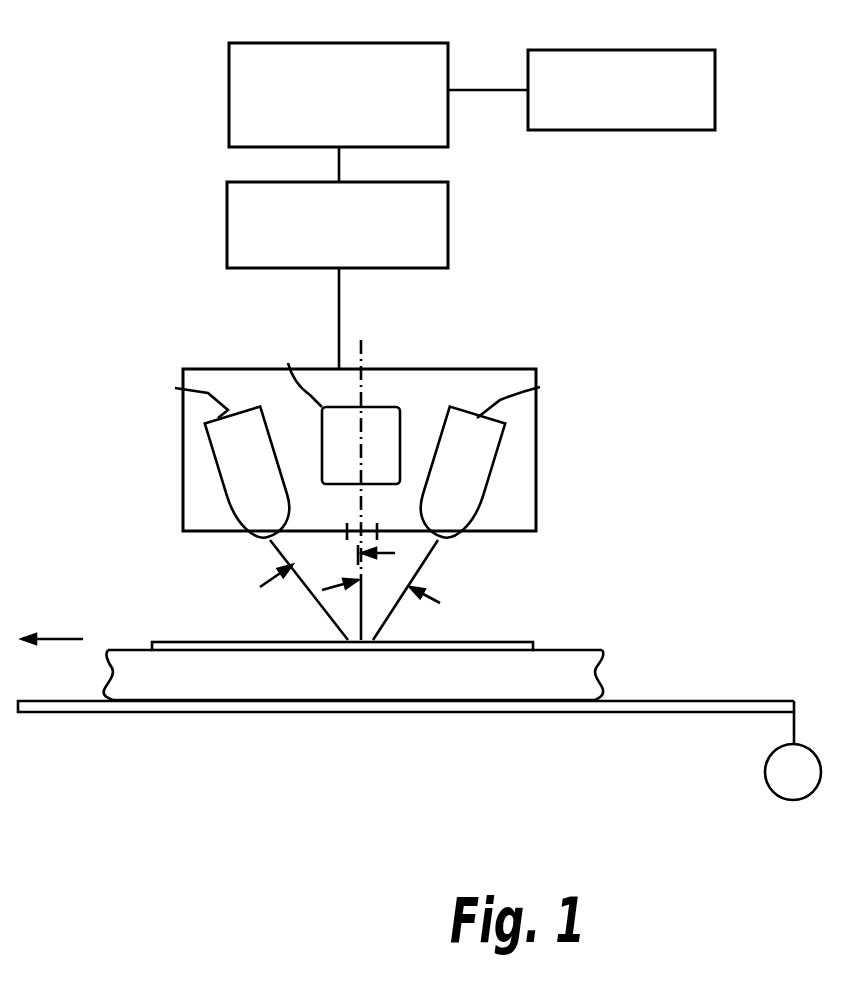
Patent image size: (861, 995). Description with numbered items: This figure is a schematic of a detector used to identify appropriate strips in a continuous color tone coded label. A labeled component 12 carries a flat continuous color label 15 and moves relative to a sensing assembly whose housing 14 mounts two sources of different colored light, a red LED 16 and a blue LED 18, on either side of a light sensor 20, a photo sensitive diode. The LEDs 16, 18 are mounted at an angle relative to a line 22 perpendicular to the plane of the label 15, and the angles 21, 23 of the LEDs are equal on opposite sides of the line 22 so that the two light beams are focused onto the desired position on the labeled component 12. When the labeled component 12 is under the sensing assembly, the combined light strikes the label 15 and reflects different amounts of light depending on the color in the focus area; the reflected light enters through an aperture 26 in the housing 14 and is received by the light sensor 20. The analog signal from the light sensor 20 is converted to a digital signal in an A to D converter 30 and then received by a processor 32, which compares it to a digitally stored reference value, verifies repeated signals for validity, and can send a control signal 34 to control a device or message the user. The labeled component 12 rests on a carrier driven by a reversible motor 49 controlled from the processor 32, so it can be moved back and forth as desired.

The labeled component 12 is at (108, 668).
The housing 14 is at (536, 473).
The continuous color label 15 is at (152, 642).
The red LED 16 is at (205, 435).
The blue LED 18 is at (500, 445).
The light sensor 20 is at (378, 405).
The angle of red LED 21 is at (352, 550).
The line perpendicular to the plane of the label 22 is at (362, 579).
The angle of blue LED 23 is at (422, 590).
The aperture 26 is at (365, 532).
The A to D converter 30 is at (448, 221).
The processor 32 is at (377, 43).
The control signal 34 is at (600, 50).
The reversible motor 49 is at (767, 770).